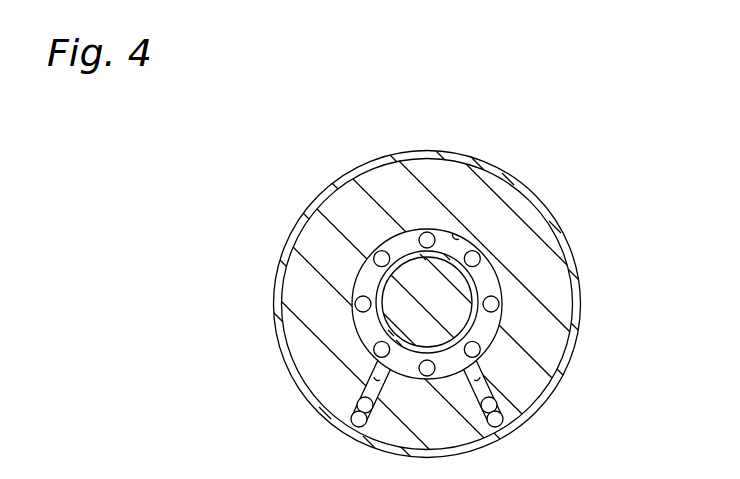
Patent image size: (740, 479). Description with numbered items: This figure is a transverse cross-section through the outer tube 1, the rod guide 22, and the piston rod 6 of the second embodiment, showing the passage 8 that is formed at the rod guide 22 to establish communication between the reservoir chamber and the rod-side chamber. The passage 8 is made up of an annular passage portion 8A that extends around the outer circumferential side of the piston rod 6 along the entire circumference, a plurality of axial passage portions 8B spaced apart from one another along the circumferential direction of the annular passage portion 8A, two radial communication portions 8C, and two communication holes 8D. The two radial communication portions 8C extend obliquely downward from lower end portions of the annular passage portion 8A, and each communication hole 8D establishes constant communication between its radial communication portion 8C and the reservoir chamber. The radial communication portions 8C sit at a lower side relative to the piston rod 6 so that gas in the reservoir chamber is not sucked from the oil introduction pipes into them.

The housing 1 is at (333, 193).
The rod guide 22 is at (520, 240).
The passage 8 is at (363, 268).
The annular passage portion 8A is at (458, 236).
The axial passage portions 8B is at (421, 228).
The radial communication portions 8C is at (368, 381).
The communication holes 8D is at (358, 406).
The piston rod 6 is at (450, 298).